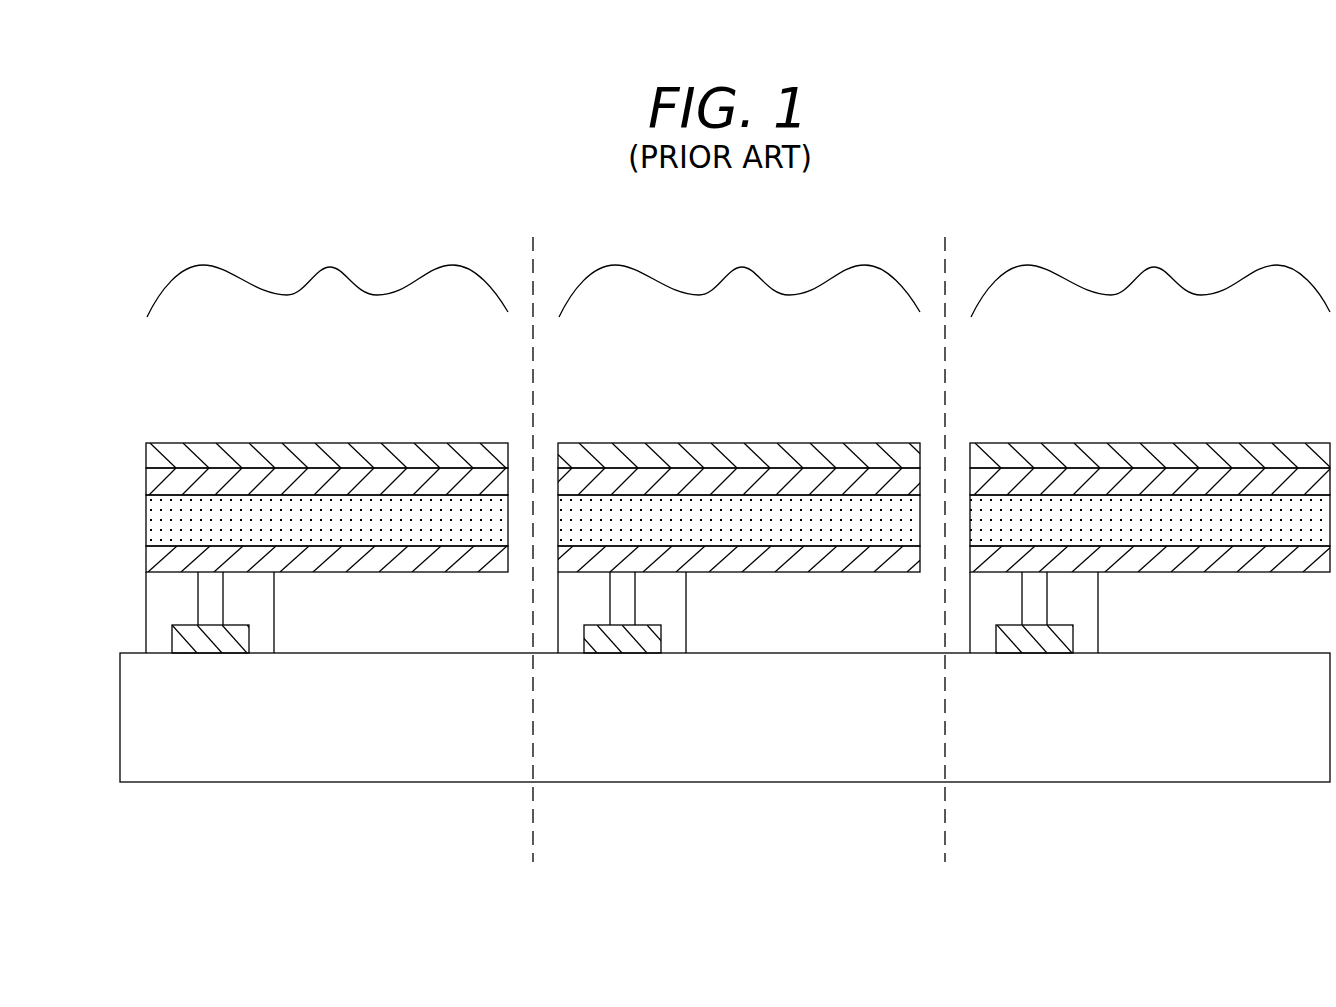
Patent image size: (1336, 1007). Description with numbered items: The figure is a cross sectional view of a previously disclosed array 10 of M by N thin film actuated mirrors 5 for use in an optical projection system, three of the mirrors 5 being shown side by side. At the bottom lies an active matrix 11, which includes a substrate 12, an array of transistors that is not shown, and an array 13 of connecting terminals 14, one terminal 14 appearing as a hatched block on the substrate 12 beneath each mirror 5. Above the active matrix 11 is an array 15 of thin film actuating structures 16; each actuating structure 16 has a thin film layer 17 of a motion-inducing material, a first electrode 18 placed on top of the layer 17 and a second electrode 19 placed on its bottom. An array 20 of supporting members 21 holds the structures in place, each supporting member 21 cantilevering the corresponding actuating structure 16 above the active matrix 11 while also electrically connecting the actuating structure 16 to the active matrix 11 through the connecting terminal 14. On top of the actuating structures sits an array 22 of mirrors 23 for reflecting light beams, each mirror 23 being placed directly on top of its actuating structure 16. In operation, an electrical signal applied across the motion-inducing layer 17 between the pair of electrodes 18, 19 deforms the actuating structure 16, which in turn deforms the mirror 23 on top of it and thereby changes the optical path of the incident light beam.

The thin film actuated mirror 5 is at (738, 271).
The array of thin film actuated mirrors 10 is at (1064, 216).
The active matrix 11 is at (103, 652).
The substrate 12 is at (378, 727).
The array of connecting terminals 13 is at (137, 625).
The connecting terminal 14 is at (210, 645).
The array of thin film actuating structures 15 is at (79, 468).
The thin film actuating structure 16 is at (441, 514).
The thin film layer of motion-inducing material 17 is at (383, 523).
The first electrode 18 is at (280, 482).
The second electrode 19 is at (482, 563).
The array of supporting members 20 is at (79, 560).
The supporting member 21 is at (259, 593).
The array of mirrors 22 is at (79, 443).
The mirror 23 is at (203, 450).